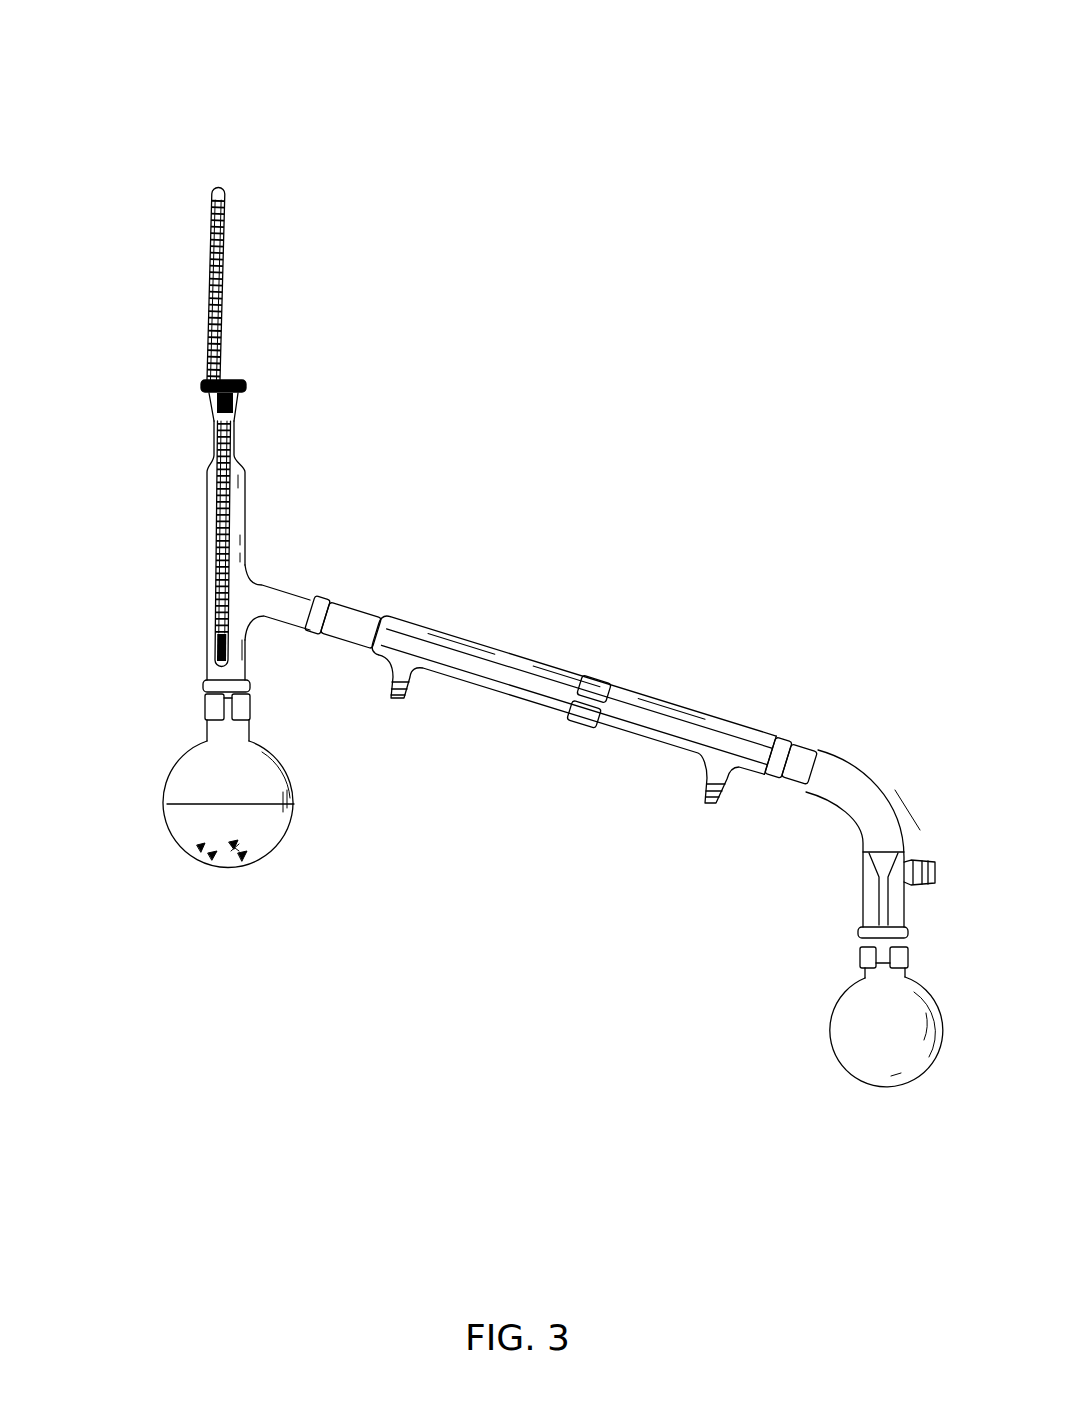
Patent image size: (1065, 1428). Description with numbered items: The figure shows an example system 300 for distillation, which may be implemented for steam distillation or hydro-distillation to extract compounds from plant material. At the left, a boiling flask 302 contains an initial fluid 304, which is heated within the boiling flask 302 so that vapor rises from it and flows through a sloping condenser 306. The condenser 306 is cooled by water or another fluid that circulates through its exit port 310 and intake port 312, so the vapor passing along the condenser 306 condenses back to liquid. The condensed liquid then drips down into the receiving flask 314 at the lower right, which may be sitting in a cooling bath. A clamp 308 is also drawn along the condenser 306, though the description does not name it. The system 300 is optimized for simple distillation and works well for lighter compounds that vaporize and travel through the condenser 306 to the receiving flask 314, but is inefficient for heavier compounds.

The system 300 is at (236, 41).
The boiling flask 302 is at (193, 770).
The initial fluid 304 is at (230, 833).
The condenser 306 is at (437, 657).
The clamp 308 is at (567, 683).
The exit port 310 is at (392, 712).
The intake port 312 is at (703, 822).
The receiving flask 314 is at (872, 1048).